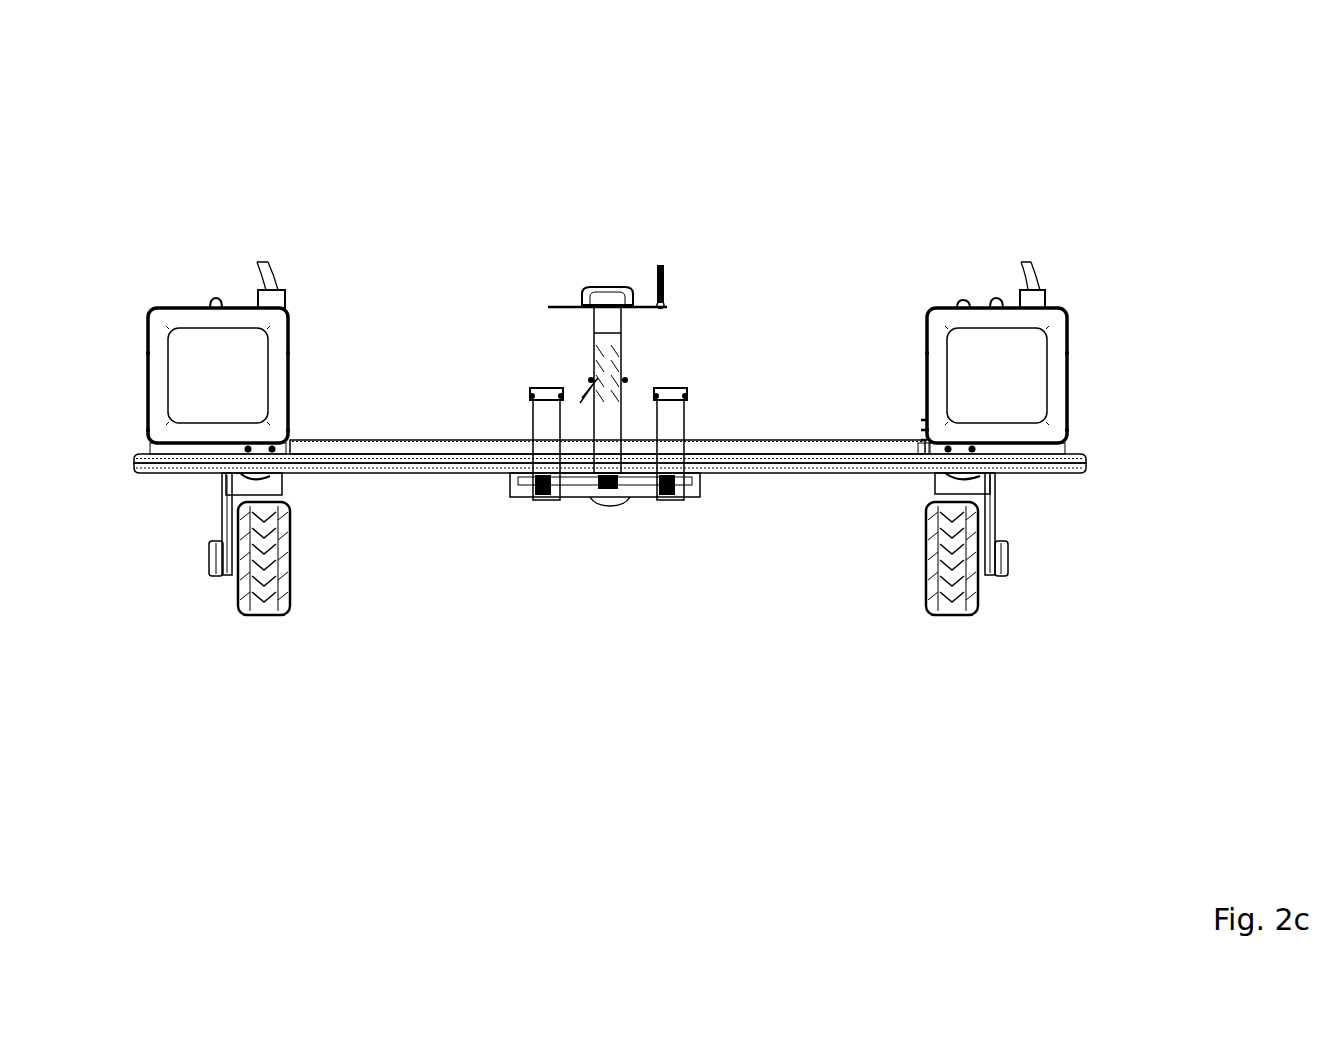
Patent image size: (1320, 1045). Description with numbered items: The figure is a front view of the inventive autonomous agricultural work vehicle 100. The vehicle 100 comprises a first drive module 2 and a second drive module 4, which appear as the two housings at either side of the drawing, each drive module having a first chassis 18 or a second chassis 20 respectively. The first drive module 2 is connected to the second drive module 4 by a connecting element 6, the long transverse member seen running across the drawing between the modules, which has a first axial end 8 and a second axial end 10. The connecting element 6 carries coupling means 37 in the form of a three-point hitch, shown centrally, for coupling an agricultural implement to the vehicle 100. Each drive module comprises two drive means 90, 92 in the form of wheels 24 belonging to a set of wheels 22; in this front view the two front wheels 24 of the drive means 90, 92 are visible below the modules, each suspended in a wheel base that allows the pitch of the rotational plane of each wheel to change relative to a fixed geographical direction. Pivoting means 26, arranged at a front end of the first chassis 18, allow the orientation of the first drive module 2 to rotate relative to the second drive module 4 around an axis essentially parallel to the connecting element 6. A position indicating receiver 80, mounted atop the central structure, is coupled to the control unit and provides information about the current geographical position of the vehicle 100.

The agricultural work vehicle 100 is at (1031, 110).
The first drive module 2 is at (1055, 340).
The second drive module 4 is at (158, 343).
The connecting element 6 is at (722, 449).
The first axial end of connecting element 8 is at (891, 472).
The second axial end of connecting element 10 is at (336, 442).
The first chassis 18 is at (1035, 448).
The second chassis 20 is at (180, 452).
The set of wheels 22 is at (693, 558).
The wheel 24 is at (693, 558).
The pivoting means 26 is at (919, 428).
The coupling means 37 is at (667, 360).
The position indicating receiver 80 is at (605, 292).
The drive means 90 is at (955, 600).
The drive means 92 is at (268, 592).